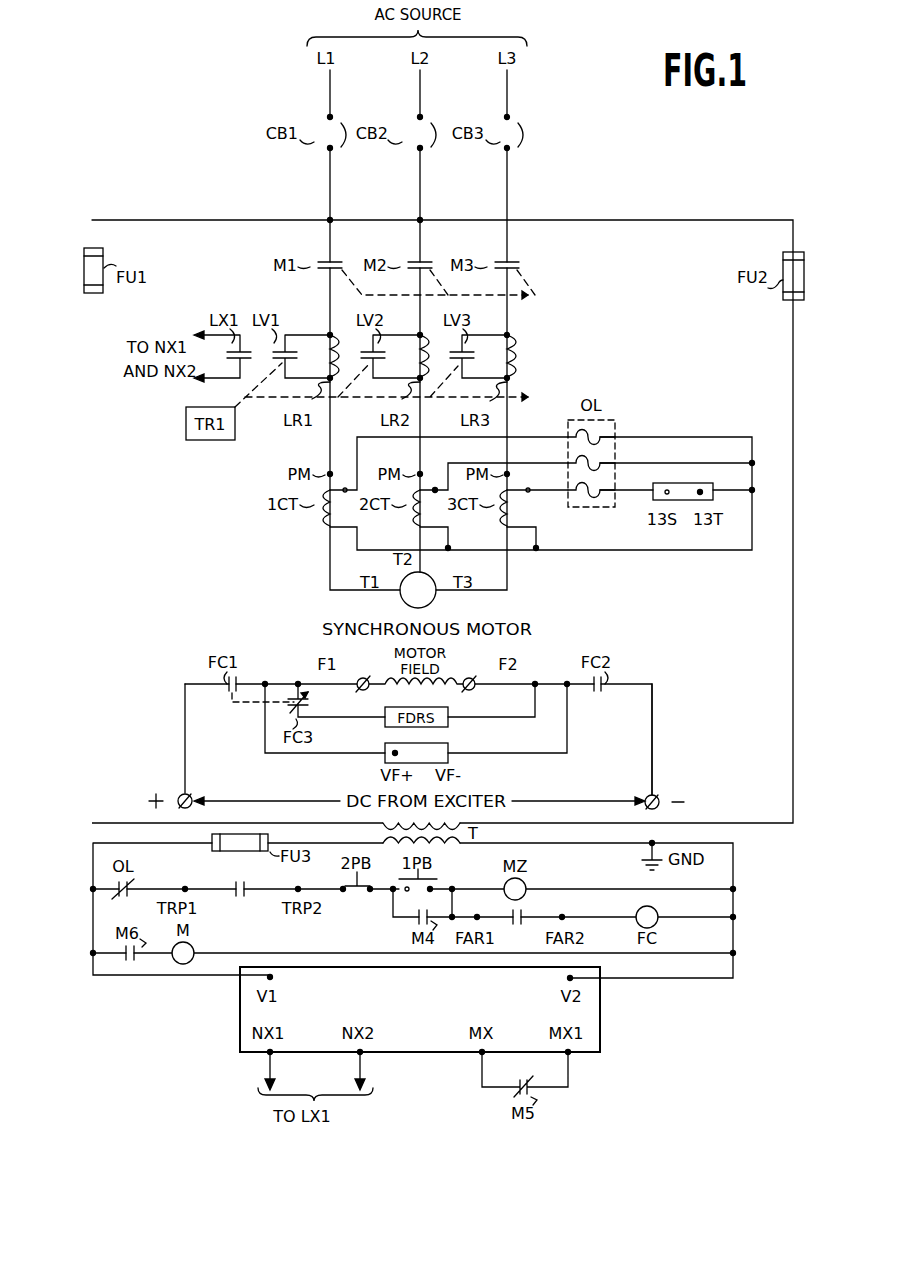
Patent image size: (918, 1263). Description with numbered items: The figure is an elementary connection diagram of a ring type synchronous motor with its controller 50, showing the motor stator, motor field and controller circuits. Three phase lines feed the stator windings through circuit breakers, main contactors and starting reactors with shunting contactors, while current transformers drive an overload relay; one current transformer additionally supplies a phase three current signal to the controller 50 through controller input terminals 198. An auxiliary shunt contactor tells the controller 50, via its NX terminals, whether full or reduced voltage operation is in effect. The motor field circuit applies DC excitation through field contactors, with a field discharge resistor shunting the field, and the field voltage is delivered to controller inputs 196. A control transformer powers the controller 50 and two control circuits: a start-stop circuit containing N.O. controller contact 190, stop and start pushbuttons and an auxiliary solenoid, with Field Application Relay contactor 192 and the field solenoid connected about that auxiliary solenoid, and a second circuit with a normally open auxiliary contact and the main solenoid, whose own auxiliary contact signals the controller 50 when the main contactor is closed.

The controller 50 is at (602, 1031).
The N.O. controller contact 190 is at (245, 877).
The Field Application Relay contactor 192 is at (522, 905).
The controller inputs VF+ and VF- 196 is at (455, 742).
The controller input terminals I3S and I3T 198 is at (712, 483).